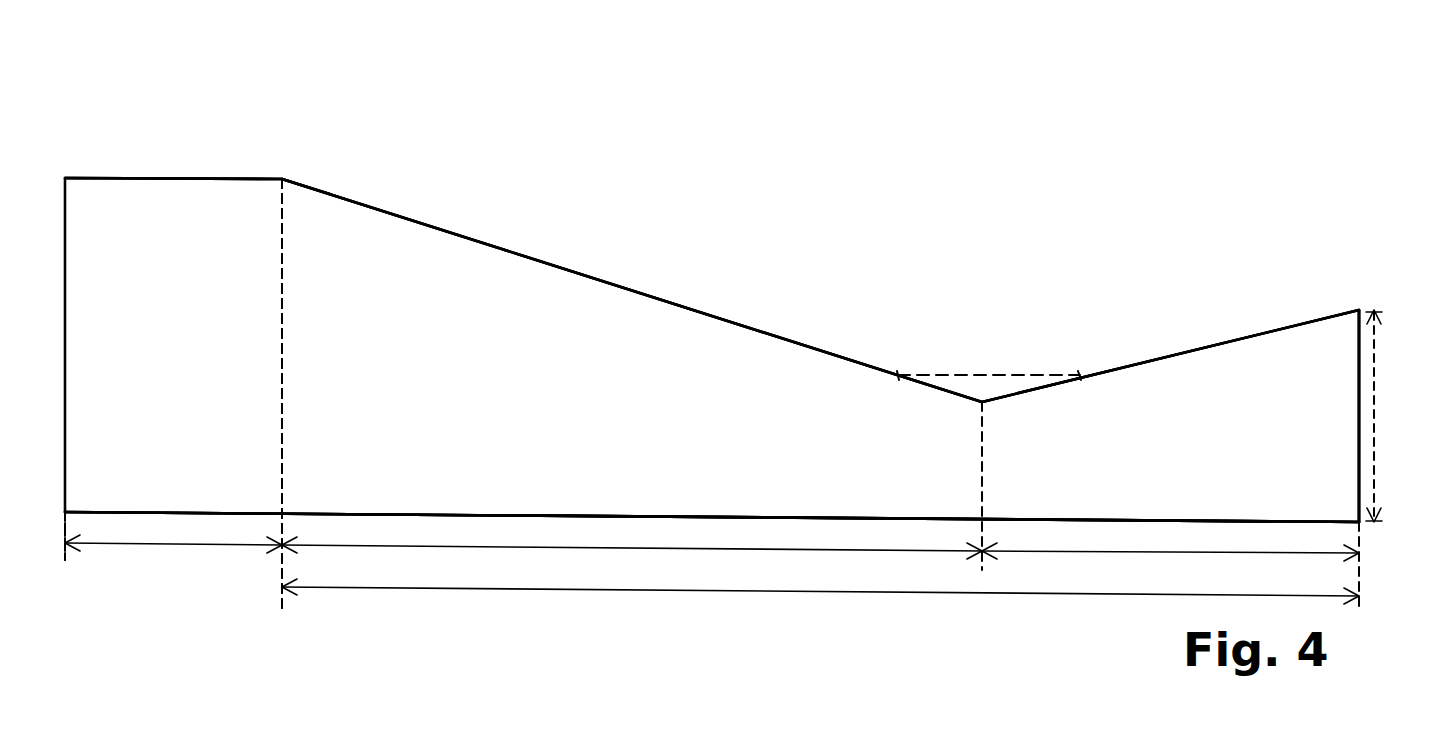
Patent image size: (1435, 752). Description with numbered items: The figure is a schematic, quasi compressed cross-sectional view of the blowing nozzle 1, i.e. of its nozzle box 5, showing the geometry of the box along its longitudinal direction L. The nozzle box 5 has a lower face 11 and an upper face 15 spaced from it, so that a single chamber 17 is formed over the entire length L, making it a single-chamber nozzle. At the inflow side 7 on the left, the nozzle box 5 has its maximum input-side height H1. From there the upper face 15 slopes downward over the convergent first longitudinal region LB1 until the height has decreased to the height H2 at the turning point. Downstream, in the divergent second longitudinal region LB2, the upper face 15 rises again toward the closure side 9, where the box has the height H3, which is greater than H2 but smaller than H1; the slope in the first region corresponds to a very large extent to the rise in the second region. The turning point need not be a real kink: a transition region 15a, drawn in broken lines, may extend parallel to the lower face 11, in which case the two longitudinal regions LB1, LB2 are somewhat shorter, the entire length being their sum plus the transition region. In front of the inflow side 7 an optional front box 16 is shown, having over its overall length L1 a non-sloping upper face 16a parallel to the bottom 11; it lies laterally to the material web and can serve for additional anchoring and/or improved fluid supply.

The blowing nozzle 1 is at (933, 229).
The nozzle box 5 is at (712, 350).
The inflow side 7 is at (258, 238).
The closure side 9 is at (1352, 338).
The lower face 11 is at (394, 520).
The upper face 15 is at (574, 262).
The transition region 15a is at (978, 370).
The front box 16 is at (128, 158).
The upper face of the front box 16a is at (262, 168).
The chamber 17 is at (550, 430).
The input-side height H1 is at (296, 396).
The height at the turning point H2 is at (996, 472).
The height on the closure side H3 is at (1392, 447).
The length of the front box L1 is at (165, 546).
The first longitudinal region LB1 is at (580, 548).
The second longitudinal region LB2 is at (1075, 556).
The length L is at (735, 592).